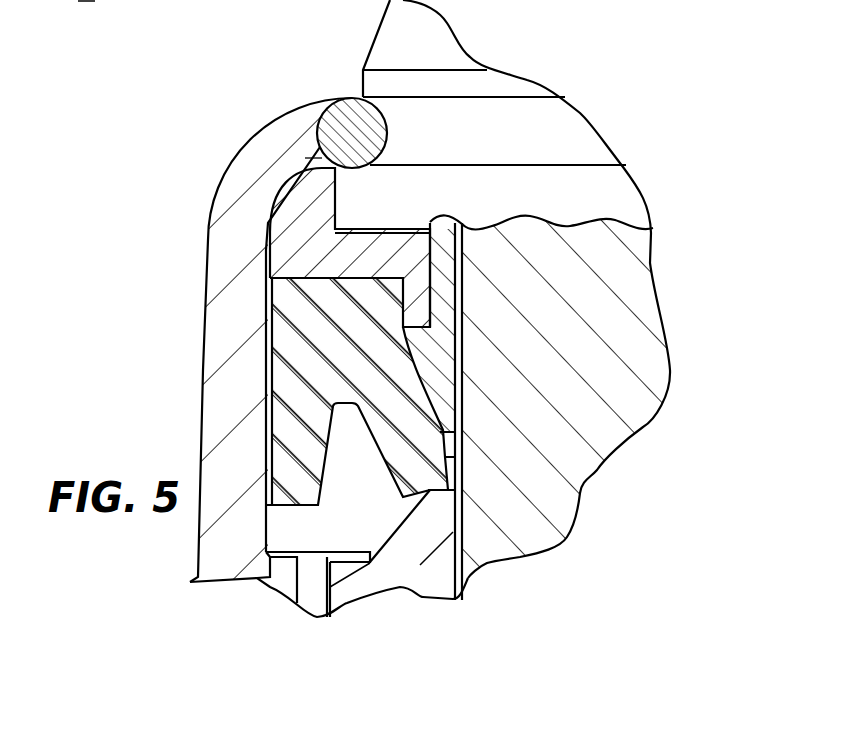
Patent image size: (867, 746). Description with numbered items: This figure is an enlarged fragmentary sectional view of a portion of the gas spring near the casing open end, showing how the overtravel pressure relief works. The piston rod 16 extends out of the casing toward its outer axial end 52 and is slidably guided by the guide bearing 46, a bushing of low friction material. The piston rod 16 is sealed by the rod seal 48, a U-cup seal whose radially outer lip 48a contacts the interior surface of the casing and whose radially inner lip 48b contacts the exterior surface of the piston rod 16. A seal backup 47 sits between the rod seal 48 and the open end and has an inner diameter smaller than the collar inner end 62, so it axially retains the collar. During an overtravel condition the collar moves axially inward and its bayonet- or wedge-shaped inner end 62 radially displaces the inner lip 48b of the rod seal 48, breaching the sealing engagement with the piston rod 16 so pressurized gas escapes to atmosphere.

The piston rod 16 is at (653, 287).
The guide bearing 46 is at (417, 562).
The seal backup 47 is at (313, 270).
The rod seal 48 is at (290, 333).
The radially outer lip 48a is at (283, 450).
The radially inner lip 48b is at (430, 472).
The outer axial end 52 is at (630, 197).
The inner end 62 is at (437, 387).